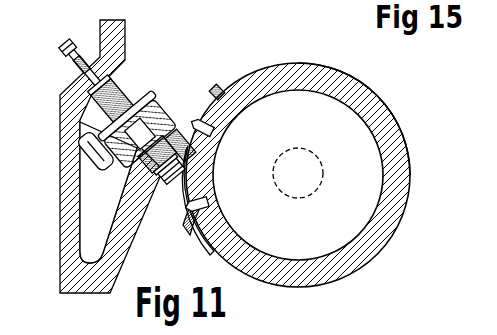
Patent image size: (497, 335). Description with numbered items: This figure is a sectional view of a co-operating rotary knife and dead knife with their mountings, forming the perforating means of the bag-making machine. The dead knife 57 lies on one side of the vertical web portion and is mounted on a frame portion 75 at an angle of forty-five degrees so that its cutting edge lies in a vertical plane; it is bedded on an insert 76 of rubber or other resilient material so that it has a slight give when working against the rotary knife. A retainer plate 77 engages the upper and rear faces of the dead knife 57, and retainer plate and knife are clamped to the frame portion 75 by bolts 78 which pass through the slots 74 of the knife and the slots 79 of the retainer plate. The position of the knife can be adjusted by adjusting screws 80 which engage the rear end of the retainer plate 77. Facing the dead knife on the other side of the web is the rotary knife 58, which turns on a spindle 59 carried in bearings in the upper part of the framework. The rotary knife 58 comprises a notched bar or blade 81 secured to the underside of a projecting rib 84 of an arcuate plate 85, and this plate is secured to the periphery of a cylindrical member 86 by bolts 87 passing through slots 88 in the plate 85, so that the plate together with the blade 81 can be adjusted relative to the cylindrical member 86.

The dead knife 57 is at (166, 184).
The rotary knife 58 is at (302, 56).
The spindle 59 is at (323, 173).
The slots of the knife 74 is at (117, 123).
The frame portion 75 is at (62, 176).
The insert 76 is at (108, 192).
The retainer plate 77 is at (111, 97).
The bolts 78 is at (123, 132).
The slots of the retainer plate 79 is at (147, 126).
The adjusting screws 80 is at (65, 40).
The bar or blade 81 is at (177, 164).
The projecting rib 84 is at (176, 134).
The arcuate plate 85 is at (196, 232).
The cylindrical member 86 is at (378, 100).
The bolts 87 is at (212, 129).
The slots 88 is at (218, 86).